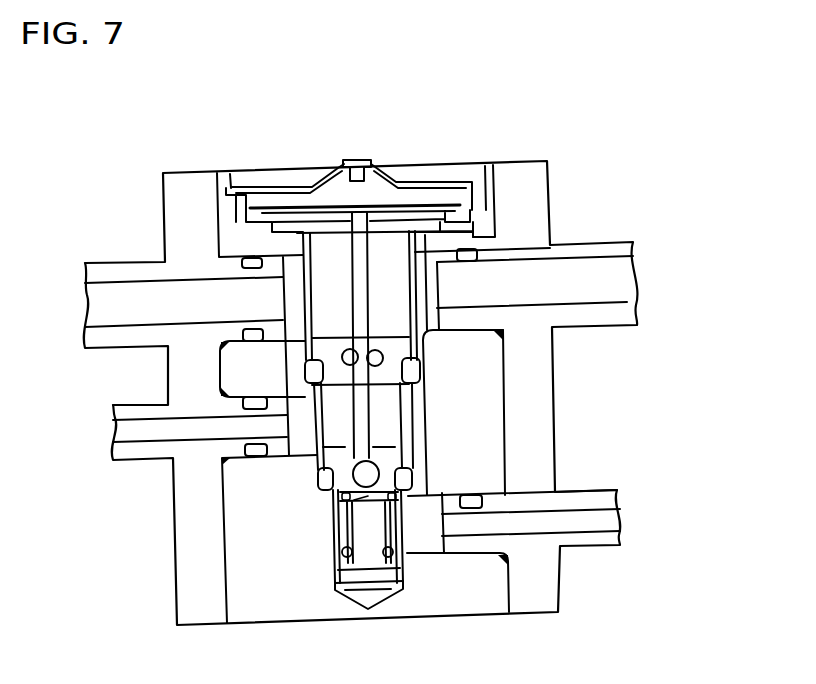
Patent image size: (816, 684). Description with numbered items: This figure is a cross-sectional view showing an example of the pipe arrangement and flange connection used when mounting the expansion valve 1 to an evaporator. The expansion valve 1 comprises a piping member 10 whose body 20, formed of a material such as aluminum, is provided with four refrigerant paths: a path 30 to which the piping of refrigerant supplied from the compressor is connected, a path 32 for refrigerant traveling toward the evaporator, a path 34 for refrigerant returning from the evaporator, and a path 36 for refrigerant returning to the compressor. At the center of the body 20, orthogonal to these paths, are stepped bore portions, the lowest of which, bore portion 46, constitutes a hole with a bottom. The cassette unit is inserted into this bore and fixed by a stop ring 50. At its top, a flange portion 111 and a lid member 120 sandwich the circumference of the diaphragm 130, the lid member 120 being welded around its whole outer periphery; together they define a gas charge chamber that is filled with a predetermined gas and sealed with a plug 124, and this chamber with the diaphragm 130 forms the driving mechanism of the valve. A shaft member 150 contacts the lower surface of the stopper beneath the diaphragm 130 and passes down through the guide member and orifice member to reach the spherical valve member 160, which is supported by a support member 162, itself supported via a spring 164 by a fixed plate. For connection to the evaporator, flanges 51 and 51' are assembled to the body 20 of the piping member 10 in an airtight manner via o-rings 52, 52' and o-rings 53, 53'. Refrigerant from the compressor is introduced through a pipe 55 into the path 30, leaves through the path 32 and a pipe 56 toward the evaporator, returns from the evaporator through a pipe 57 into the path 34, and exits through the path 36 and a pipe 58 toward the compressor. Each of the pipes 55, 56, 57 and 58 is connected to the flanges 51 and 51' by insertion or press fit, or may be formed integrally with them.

The expansion valve 1 is at (500, 145).
The piping member 10 is at (501, 191).
The body 20 is at (553, 417).
The path 30 is at (407, 538).
The path 32 is at (305, 450).
The path 34 is at (292, 299).
The path 36 is at (427, 328).
The bore portion 46 is at (363, 581).
The stop ring 50 is at (241, 193).
The flange 51 is at (507, 271).
The flange 51' is at (189, 316).
The o-ring 52 is at (542, 236).
The o-ring 52' is at (536, 477).
The o-ring 53 is at (177, 249).
The o-ring 53' is at (181, 468).
The pipe 55 is at (618, 515).
The pipe 56 is at (115, 425).
The pipe 57 is at (103, 300).
The pipe 58 is at (618, 280).
The flange portion 111 is at (447, 232).
The lid member 120 is at (302, 190).
The plug 124 is at (362, 162).
The diaphragm 130 is at (432, 192).
The shaft member 150 is at (377, 410).
The valve member 160 is at (337, 506).
The support member 162 is at (343, 548).
The spring 164 is at (333, 585).